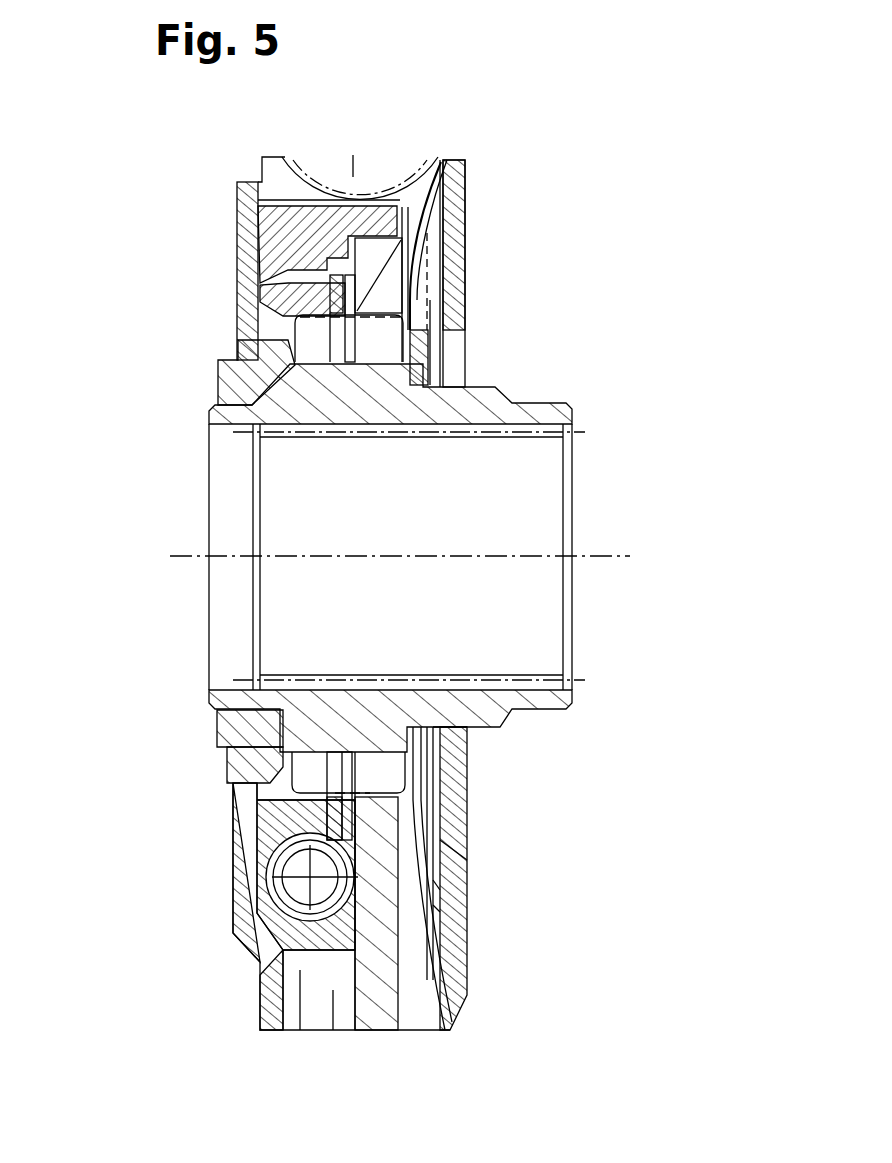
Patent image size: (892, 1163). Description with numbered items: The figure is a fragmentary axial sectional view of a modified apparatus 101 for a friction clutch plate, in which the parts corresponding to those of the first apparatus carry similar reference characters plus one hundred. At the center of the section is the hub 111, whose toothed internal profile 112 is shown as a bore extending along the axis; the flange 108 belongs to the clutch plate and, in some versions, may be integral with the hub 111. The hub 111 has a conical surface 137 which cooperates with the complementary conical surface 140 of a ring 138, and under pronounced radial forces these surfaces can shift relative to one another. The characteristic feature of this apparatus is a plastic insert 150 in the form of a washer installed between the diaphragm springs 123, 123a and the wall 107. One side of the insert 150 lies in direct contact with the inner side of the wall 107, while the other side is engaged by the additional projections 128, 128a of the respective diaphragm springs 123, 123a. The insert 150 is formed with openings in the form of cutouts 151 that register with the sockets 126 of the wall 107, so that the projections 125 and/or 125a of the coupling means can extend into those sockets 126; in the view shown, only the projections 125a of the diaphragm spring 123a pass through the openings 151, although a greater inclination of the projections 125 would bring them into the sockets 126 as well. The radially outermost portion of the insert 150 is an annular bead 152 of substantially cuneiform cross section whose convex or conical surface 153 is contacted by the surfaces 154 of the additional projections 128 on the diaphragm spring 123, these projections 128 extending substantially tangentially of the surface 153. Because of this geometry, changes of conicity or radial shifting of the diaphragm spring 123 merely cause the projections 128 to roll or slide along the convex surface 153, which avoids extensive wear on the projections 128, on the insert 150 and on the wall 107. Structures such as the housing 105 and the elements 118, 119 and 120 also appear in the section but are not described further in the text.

The apparatus 101 is at (522, 131).
The housing 105 is at (235, 930).
The wall 107 is at (463, 793).
The flange 108 is at (372, 990).
The hub 111 is at (473, 705).
The toothed internal profile 112 is at (520, 442).
The base plate 118 is at (250, 945).
The pawl member 119 is at (262, 282).
The ball 120 is at (263, 873).
The diaphragm spring 123 is at (463, 818).
The diaphragm spring 123a is at (463, 768).
The projections 125 is at (465, 978).
The projections 125a is at (462, 928).
The sockets 126 is at (447, 908).
The additional projections 128 is at (467, 188).
The additional projections 128a is at (467, 313).
The conical surface 137 is at (211, 557).
The ring 138 is at (217, 733).
The conical surface 140 is at (217, 750).
The plastic insert 150 is at (463, 850).
The cutouts 151 is at (447, 885).
The annular bead 152 is at (441, 165).
The convex surface 153 is at (258, 200).
The surfaces 154 is at (467, 220).